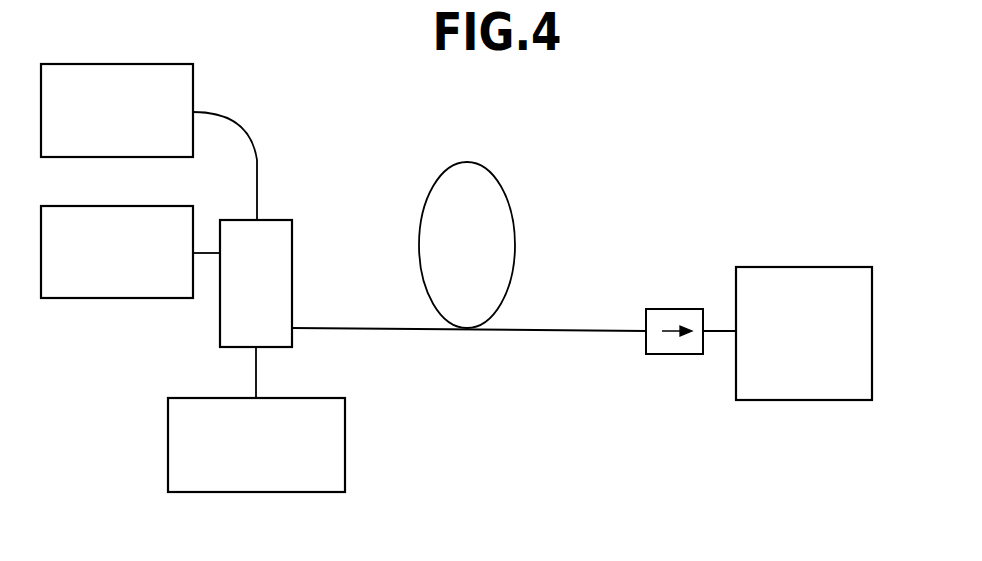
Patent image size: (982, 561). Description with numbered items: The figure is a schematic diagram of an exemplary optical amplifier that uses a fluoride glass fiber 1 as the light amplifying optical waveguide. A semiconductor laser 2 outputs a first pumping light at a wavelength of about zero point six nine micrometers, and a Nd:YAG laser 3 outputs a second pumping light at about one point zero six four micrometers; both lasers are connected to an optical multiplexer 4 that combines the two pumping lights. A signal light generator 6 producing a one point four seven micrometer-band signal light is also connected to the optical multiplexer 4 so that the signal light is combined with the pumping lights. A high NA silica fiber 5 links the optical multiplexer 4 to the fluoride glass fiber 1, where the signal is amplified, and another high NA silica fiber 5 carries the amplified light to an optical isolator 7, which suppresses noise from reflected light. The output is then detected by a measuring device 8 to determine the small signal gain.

The fluoride glass fiber 1 is at (467, 230).
The semiconductor laser 2 is at (149, 142).
The Nd:YAG laser 3 is at (130, 252).
The optical multiplexer 4 is at (256, 283).
The high NA silica fiber 5 is at (469, 315).
The signal light generator 6 is at (256, 419).
The optical isolator 7 is at (691, 317).
The measuring device 8 is at (804, 333).